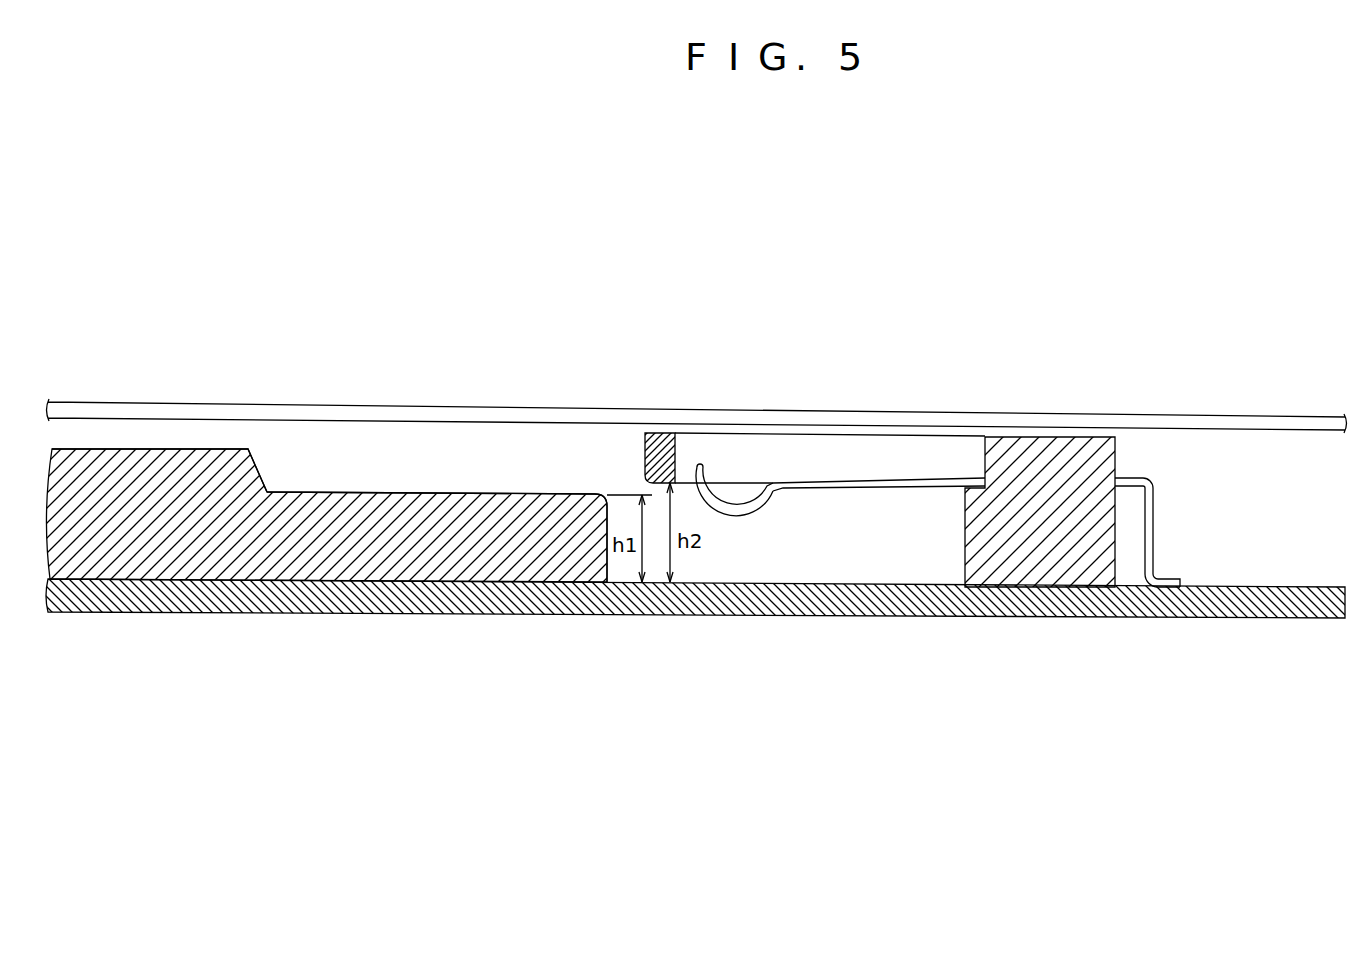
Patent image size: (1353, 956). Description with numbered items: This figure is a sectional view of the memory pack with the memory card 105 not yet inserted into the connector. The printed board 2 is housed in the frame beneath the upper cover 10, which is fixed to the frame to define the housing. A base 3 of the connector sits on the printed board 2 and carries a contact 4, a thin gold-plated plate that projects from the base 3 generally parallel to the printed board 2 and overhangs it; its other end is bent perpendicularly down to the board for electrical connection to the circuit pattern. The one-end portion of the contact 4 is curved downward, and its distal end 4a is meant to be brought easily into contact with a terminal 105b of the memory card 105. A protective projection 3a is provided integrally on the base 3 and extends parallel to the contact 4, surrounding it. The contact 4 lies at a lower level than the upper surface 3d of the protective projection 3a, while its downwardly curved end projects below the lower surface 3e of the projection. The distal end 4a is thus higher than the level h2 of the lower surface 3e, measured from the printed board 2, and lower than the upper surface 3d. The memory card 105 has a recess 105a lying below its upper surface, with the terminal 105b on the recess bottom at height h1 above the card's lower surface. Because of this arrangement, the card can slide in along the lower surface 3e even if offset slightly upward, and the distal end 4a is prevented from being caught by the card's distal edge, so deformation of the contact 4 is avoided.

The printed board 2 is at (228, 595).
The base 3 is at (845, 457).
The protective projection 3a is at (645, 445).
The upper surface of protective projection 3d is at (760, 433).
The lower surface of protective projection 3e is at (748, 482).
The contact 4 is at (956, 511).
The distal end of contact 4a is at (695, 465).
The upper cover 10 is at (1223, 415).
The memory card 105 is at (326, 500).
The recess 105a is at (322, 468).
The terminal 105b is at (407, 495).